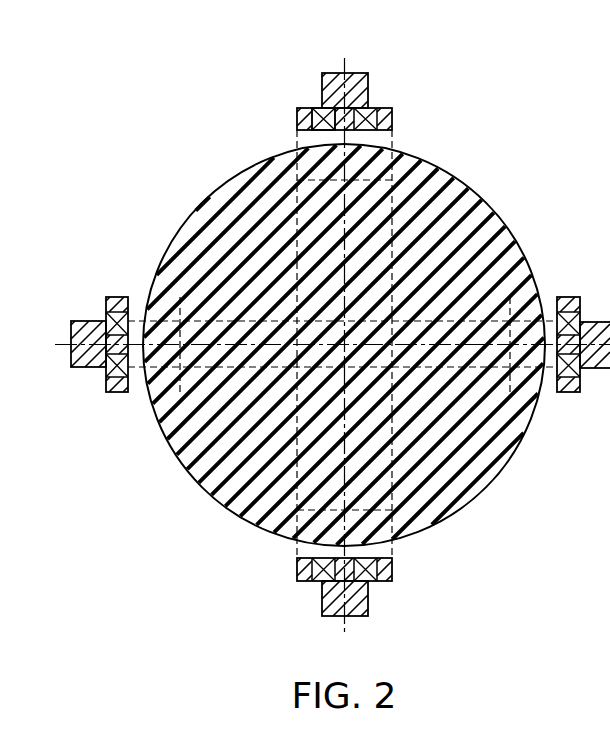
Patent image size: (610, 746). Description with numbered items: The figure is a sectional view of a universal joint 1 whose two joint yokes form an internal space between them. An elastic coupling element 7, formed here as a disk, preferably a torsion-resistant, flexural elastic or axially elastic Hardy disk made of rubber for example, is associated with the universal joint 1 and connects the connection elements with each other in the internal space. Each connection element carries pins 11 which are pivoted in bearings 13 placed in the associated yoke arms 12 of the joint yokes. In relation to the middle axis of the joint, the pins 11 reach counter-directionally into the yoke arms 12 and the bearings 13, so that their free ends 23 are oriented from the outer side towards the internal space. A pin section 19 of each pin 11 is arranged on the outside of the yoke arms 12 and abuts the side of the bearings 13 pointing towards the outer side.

The universal joint 1 is at (332, 332).
The elastic coupling element 7 is at (176, 440).
The pin 11 is at (364, 96).
The yoke arm 12 is at (387, 564).
The bearing 13 is at (318, 110).
The pin section 19 is at (355, 82).
The free end 23 is at (343, 557).